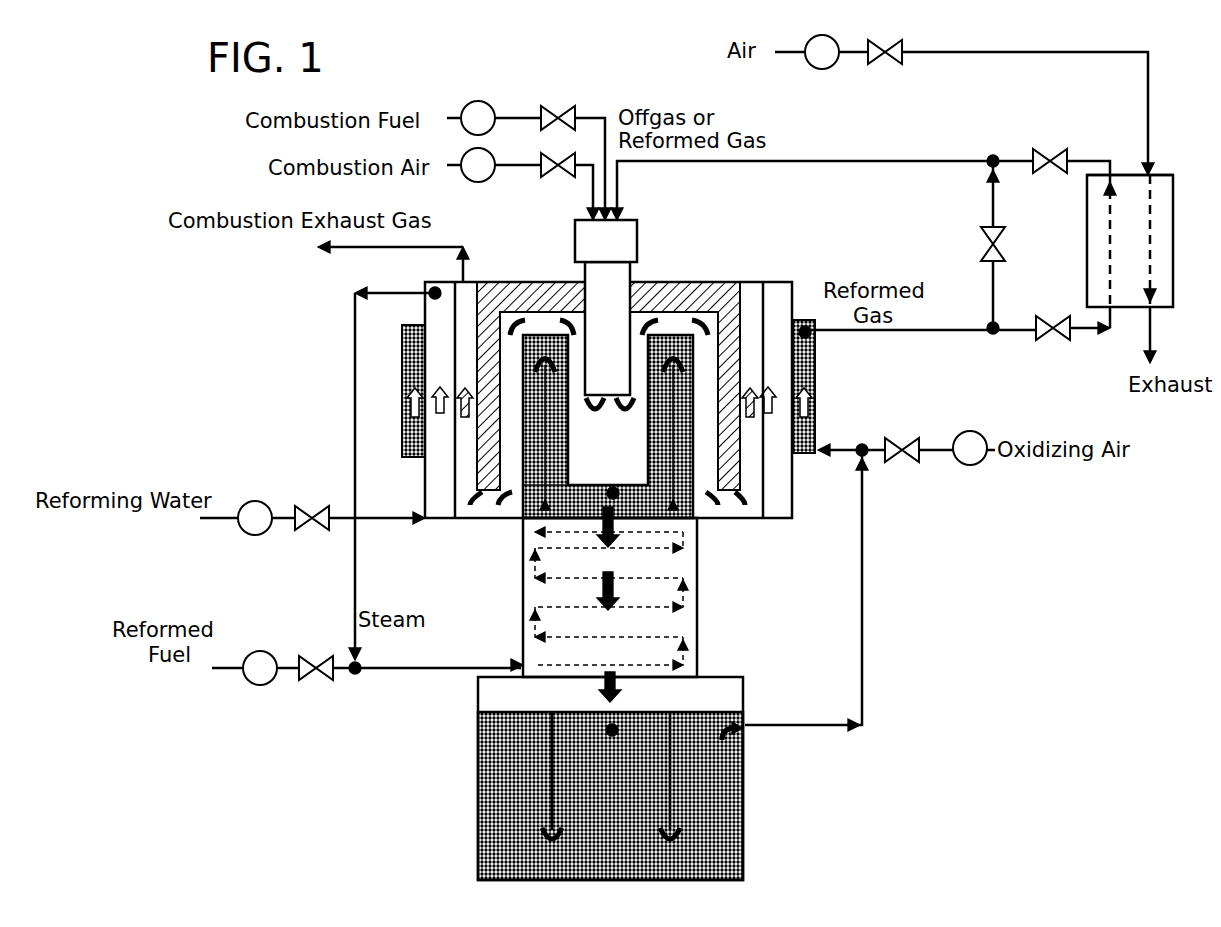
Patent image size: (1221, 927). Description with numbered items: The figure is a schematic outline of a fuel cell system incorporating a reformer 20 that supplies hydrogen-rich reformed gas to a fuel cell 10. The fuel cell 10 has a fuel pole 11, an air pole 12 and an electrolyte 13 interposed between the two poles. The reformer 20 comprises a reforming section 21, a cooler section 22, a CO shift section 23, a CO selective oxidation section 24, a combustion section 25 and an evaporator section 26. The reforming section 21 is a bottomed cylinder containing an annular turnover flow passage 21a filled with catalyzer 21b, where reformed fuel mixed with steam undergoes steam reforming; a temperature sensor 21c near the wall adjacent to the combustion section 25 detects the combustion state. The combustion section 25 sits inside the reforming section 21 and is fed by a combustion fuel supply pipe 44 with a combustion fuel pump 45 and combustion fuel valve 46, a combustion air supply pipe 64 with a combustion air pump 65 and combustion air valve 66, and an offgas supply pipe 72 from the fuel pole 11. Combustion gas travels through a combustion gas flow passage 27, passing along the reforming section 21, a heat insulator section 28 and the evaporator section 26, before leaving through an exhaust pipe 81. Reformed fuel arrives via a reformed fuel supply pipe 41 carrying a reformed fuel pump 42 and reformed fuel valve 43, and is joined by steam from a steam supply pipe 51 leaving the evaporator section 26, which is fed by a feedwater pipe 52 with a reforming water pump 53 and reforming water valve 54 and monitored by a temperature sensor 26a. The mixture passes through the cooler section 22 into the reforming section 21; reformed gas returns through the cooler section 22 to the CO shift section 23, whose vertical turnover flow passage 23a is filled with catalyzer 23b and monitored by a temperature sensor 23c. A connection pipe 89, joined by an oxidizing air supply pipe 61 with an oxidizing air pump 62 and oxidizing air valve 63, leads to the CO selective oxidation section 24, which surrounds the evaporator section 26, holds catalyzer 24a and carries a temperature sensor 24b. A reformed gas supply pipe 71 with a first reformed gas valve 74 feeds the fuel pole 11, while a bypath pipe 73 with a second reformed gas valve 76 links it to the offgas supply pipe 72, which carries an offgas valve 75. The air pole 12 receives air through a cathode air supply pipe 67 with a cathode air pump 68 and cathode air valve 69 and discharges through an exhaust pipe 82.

The fuel cell 10 is at (1160, 175).
The fuel pole 11 is at (1110, 197).
The air pole 12 is at (1150, 210).
The electrolyte 13 is at (1133, 175).
The reformer 20 is at (737, 263).
The reforming section 21 is at (693, 433).
The turnover flow passage 21a is at (533, 427).
The catalyzer 21b is at (657, 435).
The temperature sensor 21c is at (613, 493).
The cooler section 22 is at (697, 612).
The CO shift section 23 is at (754, 772).
The turnover flow passage 23a is at (633, 792).
The catalyzer 23b is at (718, 825).
The temperature sensor 23c is at (612, 730).
The CO selective oxidation section 24 is at (817, 405).
The catalyzer 24a is at (817, 417).
The temperature sensor 24b is at (810, 338).
The combustion section 25 is at (637, 245).
The evaporator section 26 is at (425, 500).
The temperature sensor 26a is at (433, 291).
The combustion gas flow passage 27 is at (465, 435).
The heat insulator section 28 is at (540, 282).
The reformed fuel supply pipe 41 is at (288, 662).
The reformed fuel pump 42 is at (262, 686).
The reformed fuel valve 43 is at (314, 680).
The combustion fuel supply pipe 44 is at (515, 116).
The combustion fuel pump 45 is at (478, 101).
The combustion fuel valve 46 is at (558, 106).
The steam supply pipe 51 is at (350, 585).
The feedwater pipe 52 is at (283, 520).
The reforming water pump 53 is at (255, 501).
The reforming water valve 54 is at (313, 506).
The oxidizing air supply pipe 61 is at (938, 447).
The oxidizing air pump 62 is at (970, 431).
The oxidizing air valve 63 is at (905, 438).
The combustion air supply pipe 64 is at (516, 163).
The combustion air pump 65 is at (480, 182).
The combustion air valve 66 is at (563, 177).
The cathode air supply pipe 67 is at (945, 52).
The cathode air pump 68 is at (825, 35).
The cathode air valve 69 is at (888, 40).
The reformed gas supply pipe 71 is at (955, 330).
The offgas supply pipe 72 is at (925, 161).
The bypath pipe 73 is at (992, 290).
The first reformed gas valve 74 is at (1055, 316).
The offgas valve 75 is at (1050, 149).
The second reformed gas valve 76 is at (987, 230).
The exhaust pipe 81 is at (465, 270).
The exhaust pipe 82 is at (1153, 343).
The connection pipe 89 is at (863, 605).